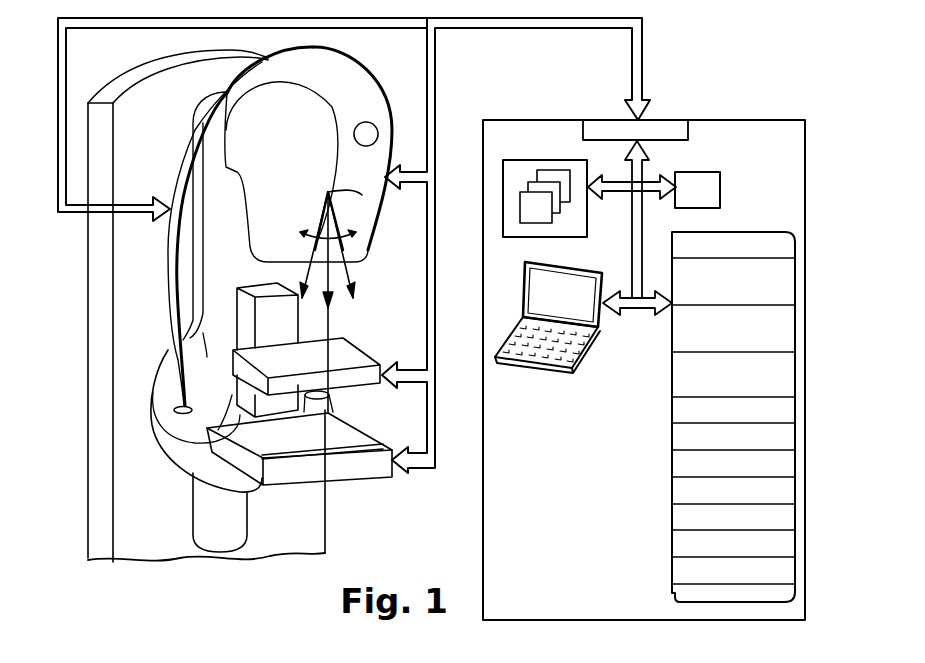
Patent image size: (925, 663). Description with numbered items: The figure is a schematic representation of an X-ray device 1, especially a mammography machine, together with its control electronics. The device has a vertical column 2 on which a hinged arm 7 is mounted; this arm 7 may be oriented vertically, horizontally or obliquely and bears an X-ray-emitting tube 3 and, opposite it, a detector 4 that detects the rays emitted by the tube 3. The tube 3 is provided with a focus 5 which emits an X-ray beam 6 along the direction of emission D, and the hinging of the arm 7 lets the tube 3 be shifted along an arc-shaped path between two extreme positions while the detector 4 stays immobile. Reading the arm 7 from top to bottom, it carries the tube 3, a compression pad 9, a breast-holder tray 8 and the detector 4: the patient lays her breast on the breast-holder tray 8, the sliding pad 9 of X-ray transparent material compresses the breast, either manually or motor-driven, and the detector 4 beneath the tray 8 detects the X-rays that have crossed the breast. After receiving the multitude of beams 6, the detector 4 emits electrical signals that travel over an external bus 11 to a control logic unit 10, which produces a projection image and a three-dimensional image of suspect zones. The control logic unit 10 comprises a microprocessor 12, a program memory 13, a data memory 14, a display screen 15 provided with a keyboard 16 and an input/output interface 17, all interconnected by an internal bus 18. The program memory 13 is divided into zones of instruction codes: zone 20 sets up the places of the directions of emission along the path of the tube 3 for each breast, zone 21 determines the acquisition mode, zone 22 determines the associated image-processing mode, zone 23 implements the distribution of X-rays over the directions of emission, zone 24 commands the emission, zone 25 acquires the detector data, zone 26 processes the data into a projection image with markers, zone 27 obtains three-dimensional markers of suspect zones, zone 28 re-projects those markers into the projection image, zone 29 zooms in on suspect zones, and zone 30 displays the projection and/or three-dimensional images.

The X-ray device 1 is at (333, 290).
The vertical column 2 is at (142, 490).
The X-ray-emitting tube 3 is at (355, 100).
The detector 4 is at (363, 480).
The focus 5 is at (330, 193).
The X-ray beam 6 is at (345, 250).
The hinged arm 7 is at (168, 278).
The breast-holder tray 8 is at (350, 430).
The compression pad 9 is at (345, 345).
The direction of emission D is at (353, 284).
The control logic unit 10 is at (483, 520).
The external bus 11 is at (430, 345).
The microprocessor 12 is at (712, 200).
The program memory 13 is at (730, 439).
The data memory 14 is at (520, 168).
The display screen 15 is at (545, 282).
The keyboard 16 is at (540, 360).
The input/output interface 17 is at (667, 130).
The internal bus 18 is at (637, 308).
The zone 20 is at (782, 255).
The zone 21 is at (785, 277).
The zone 22 is at (788, 322).
The zone 23 is at (675, 363).
The zone 24 is at (788, 407).
The zone 25 is at (672, 432).
The zone 26 is at (790, 472).
The zone 27 is at (672, 492).
The zone 28 is at (672, 518).
The zone 29 is at (790, 543).
The zone 30 is at (782, 570).